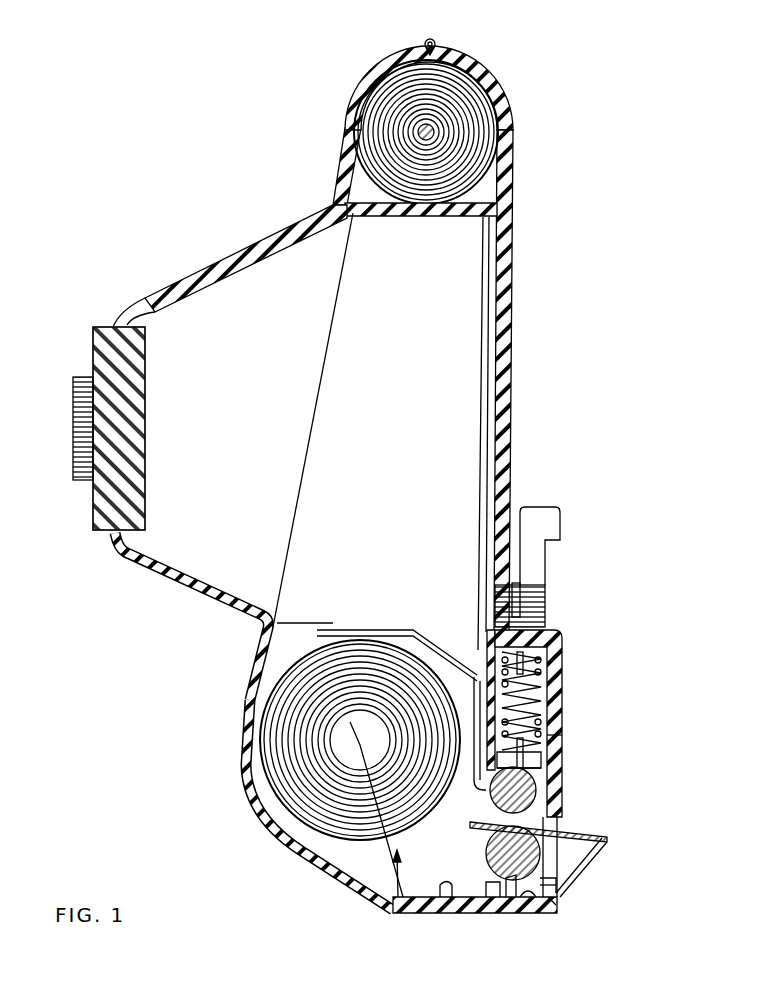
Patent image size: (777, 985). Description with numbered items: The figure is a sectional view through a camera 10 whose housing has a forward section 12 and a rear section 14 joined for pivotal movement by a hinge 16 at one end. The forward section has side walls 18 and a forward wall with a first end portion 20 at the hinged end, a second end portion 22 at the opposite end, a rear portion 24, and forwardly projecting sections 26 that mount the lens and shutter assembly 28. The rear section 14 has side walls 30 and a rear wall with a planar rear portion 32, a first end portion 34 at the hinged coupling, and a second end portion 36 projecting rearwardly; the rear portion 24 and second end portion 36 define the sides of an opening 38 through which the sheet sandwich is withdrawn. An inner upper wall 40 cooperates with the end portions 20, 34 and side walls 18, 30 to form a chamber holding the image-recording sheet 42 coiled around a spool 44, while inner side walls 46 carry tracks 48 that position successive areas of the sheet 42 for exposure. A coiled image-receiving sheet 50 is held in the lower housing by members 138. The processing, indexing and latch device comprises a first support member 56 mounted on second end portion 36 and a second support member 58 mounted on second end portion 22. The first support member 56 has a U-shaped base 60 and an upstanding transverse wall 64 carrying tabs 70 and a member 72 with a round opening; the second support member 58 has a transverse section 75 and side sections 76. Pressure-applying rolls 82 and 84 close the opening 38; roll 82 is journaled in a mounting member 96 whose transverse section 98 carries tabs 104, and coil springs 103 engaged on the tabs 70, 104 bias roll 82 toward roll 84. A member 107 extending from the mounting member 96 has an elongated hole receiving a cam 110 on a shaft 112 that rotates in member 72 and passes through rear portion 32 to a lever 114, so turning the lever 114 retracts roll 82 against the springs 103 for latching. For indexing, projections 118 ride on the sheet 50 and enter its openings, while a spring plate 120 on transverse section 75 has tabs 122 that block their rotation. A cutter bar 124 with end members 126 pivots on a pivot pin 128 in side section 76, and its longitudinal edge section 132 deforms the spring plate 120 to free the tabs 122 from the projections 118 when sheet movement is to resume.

The camera 10 is at (100, 240).
The forward section 12 is at (288, 228).
The rear section 14 is at (512, 246).
The hinge 16 is at (433, 42).
The side walls 18 is at (226, 405).
The first end portion 20 is at (413, 123).
The second end portion 22 is at (275, 812).
The rear portion 24 is at (556, 905).
The forwardly projecting sections 26 is at (185, 280).
The lens and shutter assembly 28 is at (90, 357).
The side walls 30 is at (433, 132).
The rear portion 32 is at (492, 360).
The first end portion 34 is at (465, 70).
The second end portion 36 is at (548, 735).
The opening 38 is at (545, 822).
The inner upper wall 40 is at (410, 217).
The image-recording sheet 42 is at (496, 172).
The spool 44 is at (422, 128).
The inner side walls 46 is at (346, 420).
The tracks 48 is at (488, 297).
The image-receiving sheet 50 is at (448, 830).
The first support member 56 is at (535, 725).
The second support member 58 is at (395, 905).
The U-shaped base 60 is at (530, 705).
The transverse wall 64 is at (519, 708).
The tabs 70 is at (522, 668).
The member 72 is at (512, 584).
The transverse section 75 is at (430, 900).
The side sections 76 is at (330, 760).
The roll 82 is at (522, 798).
The roll 84 is at (495, 899).
The mounting member 96 is at (525, 790).
The transverse section 98 is at (530, 770).
The coil springs 103 is at (530, 690).
The tabs 104 is at (552, 760).
The member 107 is at (478, 678).
The cam 110 is at (490, 648).
The shaft 112 is at (520, 594).
The lever 114 is at (546, 521).
The radial projections 118 is at (512, 900).
The spring plate 120 is at (470, 900).
The tabs 122 is at (526, 902).
The cutter bar 124 is at (606, 858).
The end members 126 is at (560, 870).
The pivot pin 128 is at (560, 887).
The longitudinal edge section 132 is at (552, 913).
The members 138 is at (330, 628).